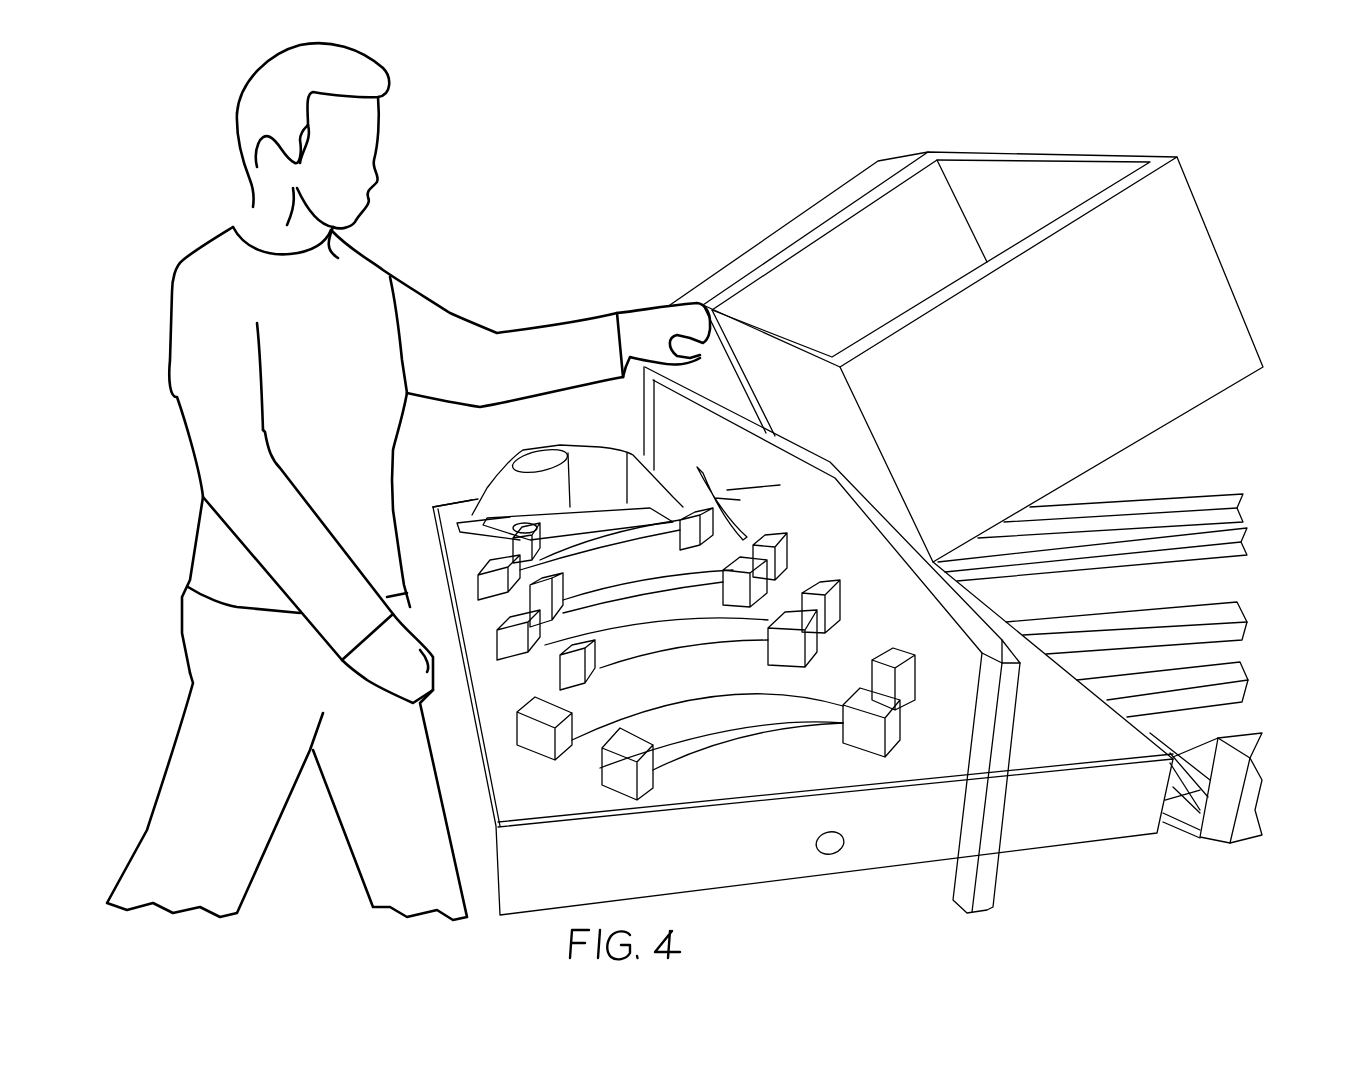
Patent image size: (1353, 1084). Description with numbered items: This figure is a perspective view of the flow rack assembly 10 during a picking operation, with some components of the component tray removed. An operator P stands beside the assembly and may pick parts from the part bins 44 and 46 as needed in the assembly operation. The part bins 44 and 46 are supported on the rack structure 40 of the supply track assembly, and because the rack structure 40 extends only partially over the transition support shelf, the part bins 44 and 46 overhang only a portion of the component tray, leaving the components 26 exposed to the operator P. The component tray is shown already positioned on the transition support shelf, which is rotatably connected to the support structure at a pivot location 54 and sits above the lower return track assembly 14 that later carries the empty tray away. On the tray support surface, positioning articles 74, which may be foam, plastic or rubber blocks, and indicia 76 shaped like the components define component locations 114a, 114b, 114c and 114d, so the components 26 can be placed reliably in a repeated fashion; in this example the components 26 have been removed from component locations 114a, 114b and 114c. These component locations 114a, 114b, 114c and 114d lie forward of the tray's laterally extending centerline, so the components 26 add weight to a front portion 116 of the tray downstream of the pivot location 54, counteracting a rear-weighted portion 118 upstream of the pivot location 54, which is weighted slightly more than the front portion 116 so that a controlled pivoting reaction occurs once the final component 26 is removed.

The operator P is at (183, 263).
The flow rack assembly 10 is at (1222, 200).
The return track assembly 14 is at (917, 767).
The component 26 is at (594, 458).
The rack structure 40 is at (1255, 612).
The part bin 44 is at (853, 184).
The part bin 46 is at (1052, 166).
The pivot location 54 is at (831, 855).
The positioning article 74 is at (888, 657).
The indicia 76 is at (795, 740).
The component location 114a is at (741, 756).
The component location 114b is at (693, 656).
The component location 114c is at (662, 590).
The component location 114d is at (471, 499).
The front portion 116 is at (632, 826).
The rear-weighted portion 118 is at (1117, 768).